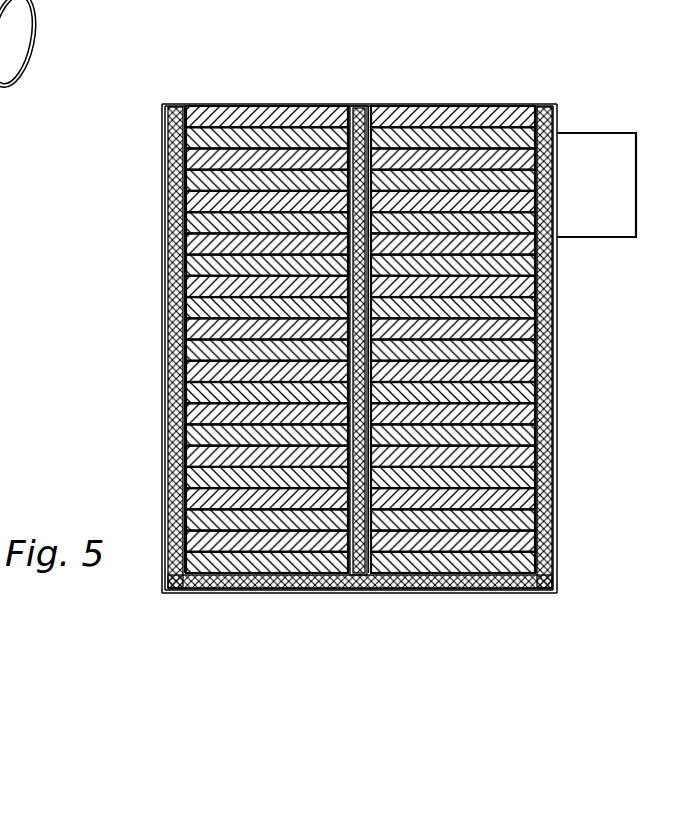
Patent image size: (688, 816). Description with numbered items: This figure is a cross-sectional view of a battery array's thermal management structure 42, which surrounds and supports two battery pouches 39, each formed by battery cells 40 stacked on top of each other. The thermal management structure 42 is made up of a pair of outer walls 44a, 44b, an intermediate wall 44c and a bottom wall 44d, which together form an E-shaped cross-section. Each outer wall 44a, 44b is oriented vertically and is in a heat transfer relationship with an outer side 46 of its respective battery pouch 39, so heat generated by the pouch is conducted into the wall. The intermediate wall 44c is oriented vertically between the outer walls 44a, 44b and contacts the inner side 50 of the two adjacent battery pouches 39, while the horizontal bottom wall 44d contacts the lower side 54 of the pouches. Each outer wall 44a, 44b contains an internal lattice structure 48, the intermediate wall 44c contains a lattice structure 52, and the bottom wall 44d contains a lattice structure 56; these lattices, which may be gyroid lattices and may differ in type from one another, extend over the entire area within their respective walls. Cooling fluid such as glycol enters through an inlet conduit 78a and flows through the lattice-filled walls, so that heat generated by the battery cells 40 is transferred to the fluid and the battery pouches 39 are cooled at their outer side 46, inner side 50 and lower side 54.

The battery pouch 39 is at (223, 510).
The battery cell 40 is at (282, 133).
The thermal management structure 42 is at (333, 350).
The outer wall 44a is at (0, 230).
The outer wall 44b is at (163, 288).
The intermediate wall 44c is at (357, 103).
The bottom wall 44d is at (315, 583).
The outer side 46 is at (180, 380).
The lattice structure 48 is at (175, 208).
The inner side 50 is at (0, 345).
The lattice structure 52 is at (352, 152).
The lower side 54 is at (225, 575).
The lattice structure 56 is at (487, 582).
The inlet conduit 78a is at (0, 112).